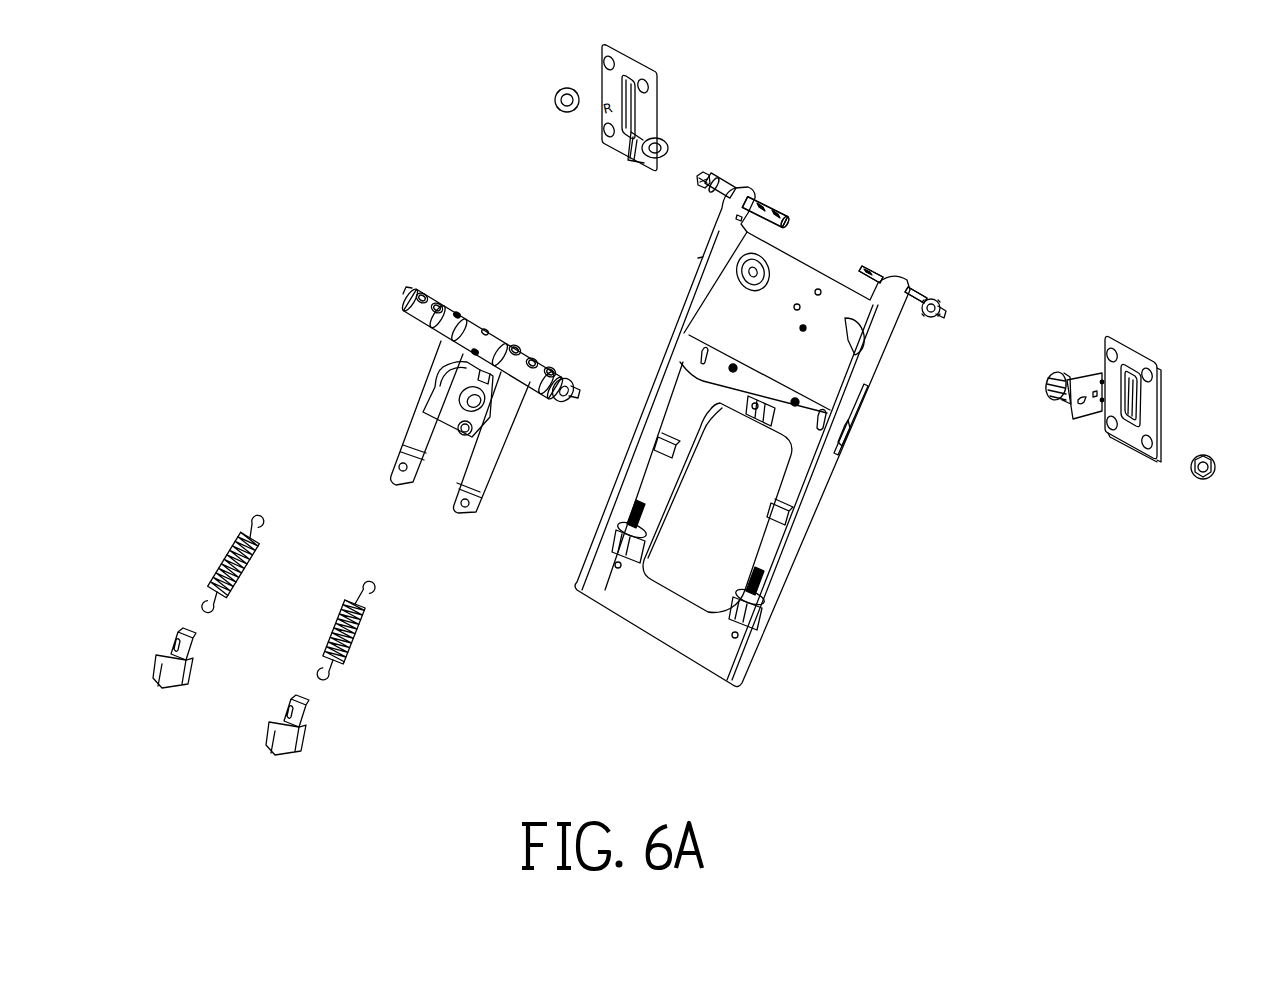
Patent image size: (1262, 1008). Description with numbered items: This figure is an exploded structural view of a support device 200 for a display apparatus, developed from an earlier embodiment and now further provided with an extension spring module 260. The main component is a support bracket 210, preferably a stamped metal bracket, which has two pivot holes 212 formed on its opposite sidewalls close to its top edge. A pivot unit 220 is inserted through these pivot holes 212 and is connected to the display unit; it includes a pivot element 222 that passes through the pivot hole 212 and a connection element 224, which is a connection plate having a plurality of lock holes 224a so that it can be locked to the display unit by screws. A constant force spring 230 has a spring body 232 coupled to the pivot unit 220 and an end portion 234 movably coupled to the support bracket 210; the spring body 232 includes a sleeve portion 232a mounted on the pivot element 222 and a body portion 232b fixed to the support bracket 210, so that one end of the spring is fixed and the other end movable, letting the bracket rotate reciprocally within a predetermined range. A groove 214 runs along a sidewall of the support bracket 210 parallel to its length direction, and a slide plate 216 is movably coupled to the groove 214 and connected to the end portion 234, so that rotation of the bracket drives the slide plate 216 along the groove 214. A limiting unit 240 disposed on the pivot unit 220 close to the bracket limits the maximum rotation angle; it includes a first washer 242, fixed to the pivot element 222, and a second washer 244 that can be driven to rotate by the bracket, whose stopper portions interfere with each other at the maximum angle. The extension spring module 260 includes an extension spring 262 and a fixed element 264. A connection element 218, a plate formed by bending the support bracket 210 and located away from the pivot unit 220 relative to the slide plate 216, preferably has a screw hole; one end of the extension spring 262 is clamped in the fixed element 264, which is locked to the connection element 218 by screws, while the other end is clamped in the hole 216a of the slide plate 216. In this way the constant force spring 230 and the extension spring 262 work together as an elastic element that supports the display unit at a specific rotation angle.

The support device 200 is at (1243, 103).
The support bracket 210 is at (710, 650).
The pivot hole 212 is at (762, 193).
The groove 214 is at (870, 403).
The slide plate 216 is at (798, 418).
The hole 216a is at (697, 357).
The connection element 218 is at (753, 603).
The pivot unit 220 is at (1123, 232).
The pivot element 222 is at (923, 308).
The connection element 224 is at (1128, 356).
The lock hole 224a is at (1153, 384).
The constant force spring 230 is at (514, 300).
The spring body 232 is at (333, 373).
The sleeve portion 232a is at (405, 312).
The body portion 232b is at (450, 390).
The end portion 234 is at (460, 510).
The limiting unit 240 is at (937, 413).
The first washer 242 is at (932, 320).
The second washer 244 is at (1052, 397).
The extension spring module 260 is at (442, 677).
The extension spring 262 is at (362, 637).
The fixed element 264 is at (300, 746).